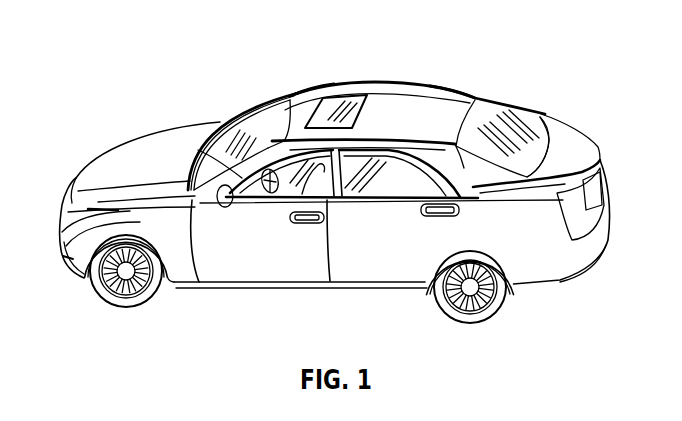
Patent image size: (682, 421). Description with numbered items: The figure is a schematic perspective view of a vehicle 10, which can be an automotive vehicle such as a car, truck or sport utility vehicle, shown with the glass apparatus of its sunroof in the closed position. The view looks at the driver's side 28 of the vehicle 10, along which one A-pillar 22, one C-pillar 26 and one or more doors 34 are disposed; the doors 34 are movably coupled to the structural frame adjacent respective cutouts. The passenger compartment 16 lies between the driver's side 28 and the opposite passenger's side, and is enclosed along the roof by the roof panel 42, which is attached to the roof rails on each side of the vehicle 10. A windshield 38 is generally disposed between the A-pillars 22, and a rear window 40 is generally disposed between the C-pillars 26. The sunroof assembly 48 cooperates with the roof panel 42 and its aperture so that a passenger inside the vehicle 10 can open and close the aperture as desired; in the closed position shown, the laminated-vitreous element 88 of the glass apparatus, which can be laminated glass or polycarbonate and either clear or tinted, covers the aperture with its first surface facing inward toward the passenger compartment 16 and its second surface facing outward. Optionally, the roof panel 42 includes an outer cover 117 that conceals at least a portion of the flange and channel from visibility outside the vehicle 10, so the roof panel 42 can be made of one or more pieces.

The vehicle 10 is at (153, 33).
The passenger compartment 16 is at (258, 190).
The A-pillar 22 is at (198, 150).
The C-pillar 26 is at (497, 115).
The driver's side 28 is at (552, 251).
The door 34 is at (213, 263).
The windshield 38 is at (253, 128).
The rear window 40 is at (534, 120).
The roof panel 42 is at (398, 88).
The sunroof assembly 48 is at (345, 86).
The laminated-vitreous element 88 is at (318, 90).
The outer cover 117 is at (443, 92).